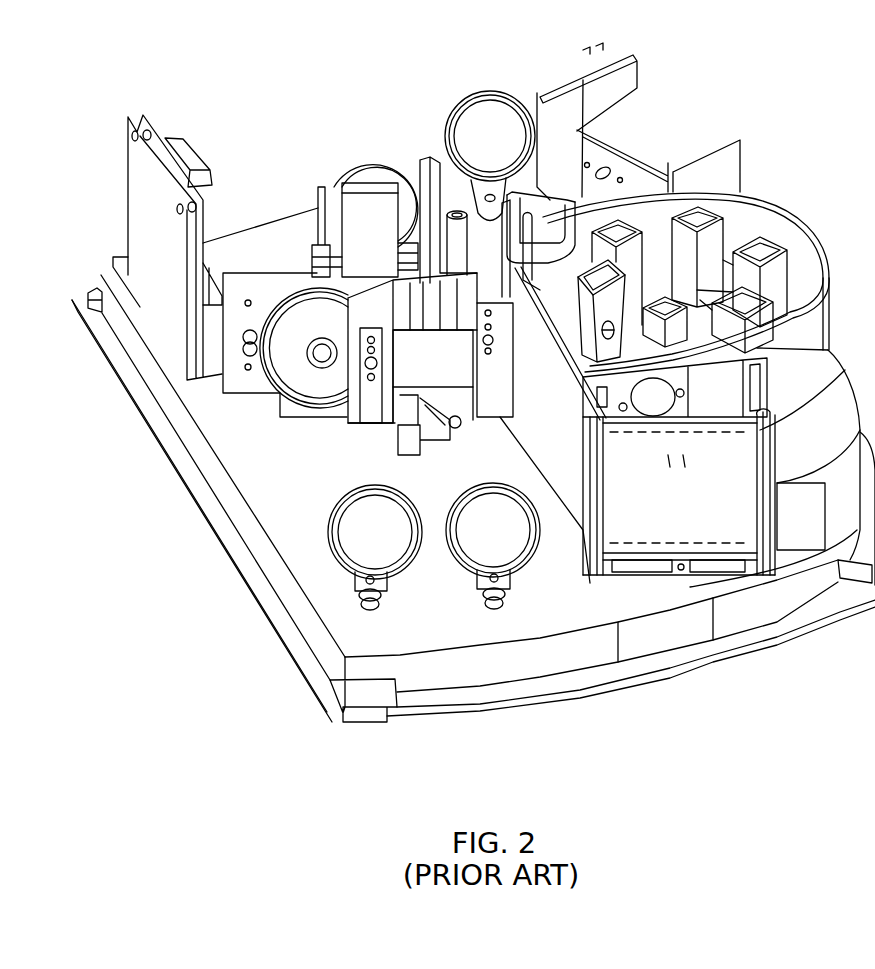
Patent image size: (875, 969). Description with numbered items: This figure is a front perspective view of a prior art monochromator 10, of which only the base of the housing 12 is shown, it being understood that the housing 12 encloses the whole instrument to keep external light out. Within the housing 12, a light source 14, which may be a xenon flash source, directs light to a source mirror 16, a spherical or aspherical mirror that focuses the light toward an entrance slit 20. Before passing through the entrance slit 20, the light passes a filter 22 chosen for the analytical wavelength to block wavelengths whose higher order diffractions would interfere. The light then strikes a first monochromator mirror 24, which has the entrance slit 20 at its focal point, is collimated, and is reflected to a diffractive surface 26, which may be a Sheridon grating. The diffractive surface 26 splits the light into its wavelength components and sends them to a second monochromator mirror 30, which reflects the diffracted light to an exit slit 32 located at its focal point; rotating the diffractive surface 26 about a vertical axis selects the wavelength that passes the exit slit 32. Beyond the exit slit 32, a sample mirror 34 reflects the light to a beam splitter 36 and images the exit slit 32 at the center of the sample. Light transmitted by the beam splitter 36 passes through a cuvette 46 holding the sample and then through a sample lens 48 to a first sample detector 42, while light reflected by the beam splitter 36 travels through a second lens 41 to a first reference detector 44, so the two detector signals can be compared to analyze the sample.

The monochromator 10 is at (795, 160).
The housing 12 is at (236, 538).
The light source 14 is at (367, 203).
The source mirror 16 is at (378, 170).
The entrance slit 20 is at (367, 363).
The filter 22 is at (312, 383).
The first monochromator mirror 24 is at (390, 548).
The diffractive surface 26 is at (447, 370).
The second monochromator mirror 30 is at (510, 543).
The exit slit 32 is at (477, 417).
The sample mirror 34 is at (482, 120).
The beam splitter 36 is at (548, 218).
The second lens 41 is at (640, 153).
The first sample detector 42 is at (688, 518).
The first reference detector 44 is at (630, 137).
The cuvette 46 is at (603, 308).
The sample lens 48 is at (657, 410).